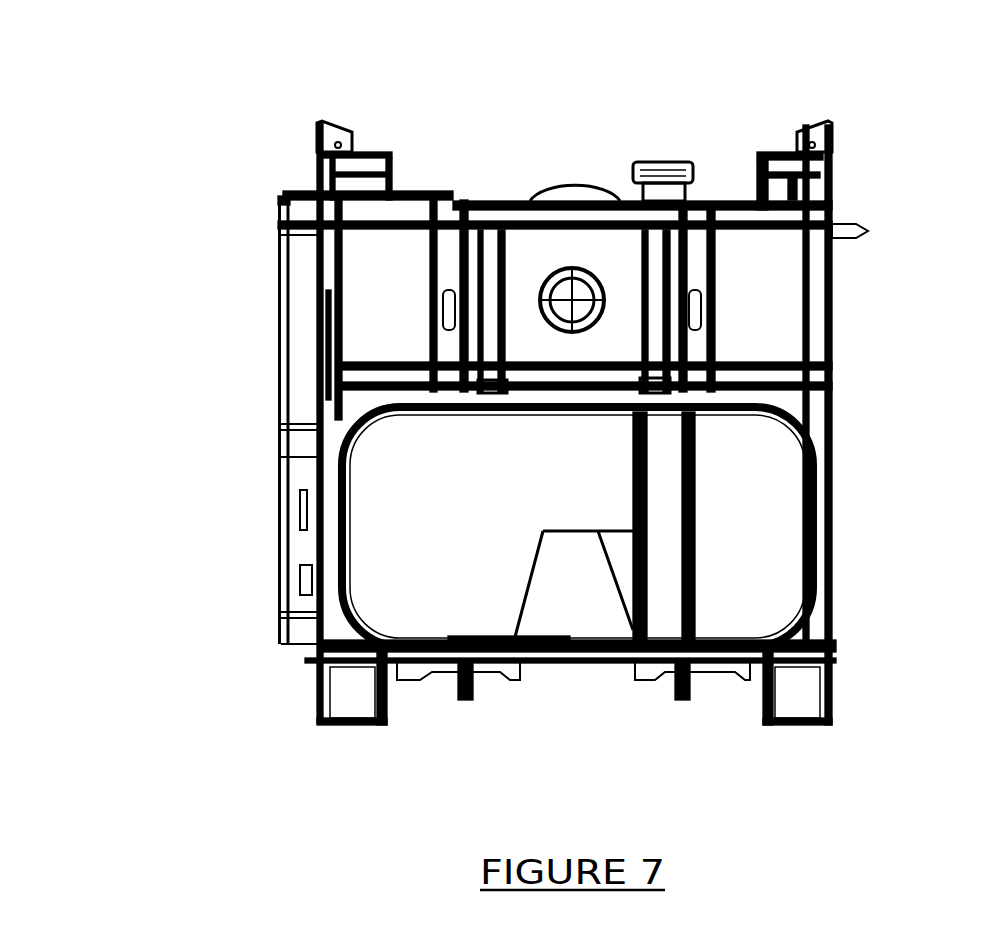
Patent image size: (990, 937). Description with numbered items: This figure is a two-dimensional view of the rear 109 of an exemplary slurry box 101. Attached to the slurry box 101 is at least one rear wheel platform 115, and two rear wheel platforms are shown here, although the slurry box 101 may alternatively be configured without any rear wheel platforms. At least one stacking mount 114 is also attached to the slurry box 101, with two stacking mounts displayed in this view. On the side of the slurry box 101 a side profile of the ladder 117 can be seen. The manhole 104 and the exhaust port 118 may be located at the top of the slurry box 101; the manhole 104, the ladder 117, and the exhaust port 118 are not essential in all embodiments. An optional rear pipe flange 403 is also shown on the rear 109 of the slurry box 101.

The slurry box 101 is at (832, 650).
The manhole 104 is at (572, 180).
The rear 109 is at (330, 634).
The stacking mount 114 is at (322, 128).
The rear wheel platform 115 is at (368, 150).
The ladder 117 is at (275, 333).
The exhaust port 118 is at (668, 160).
The rear pipe flange 403 is at (548, 288).